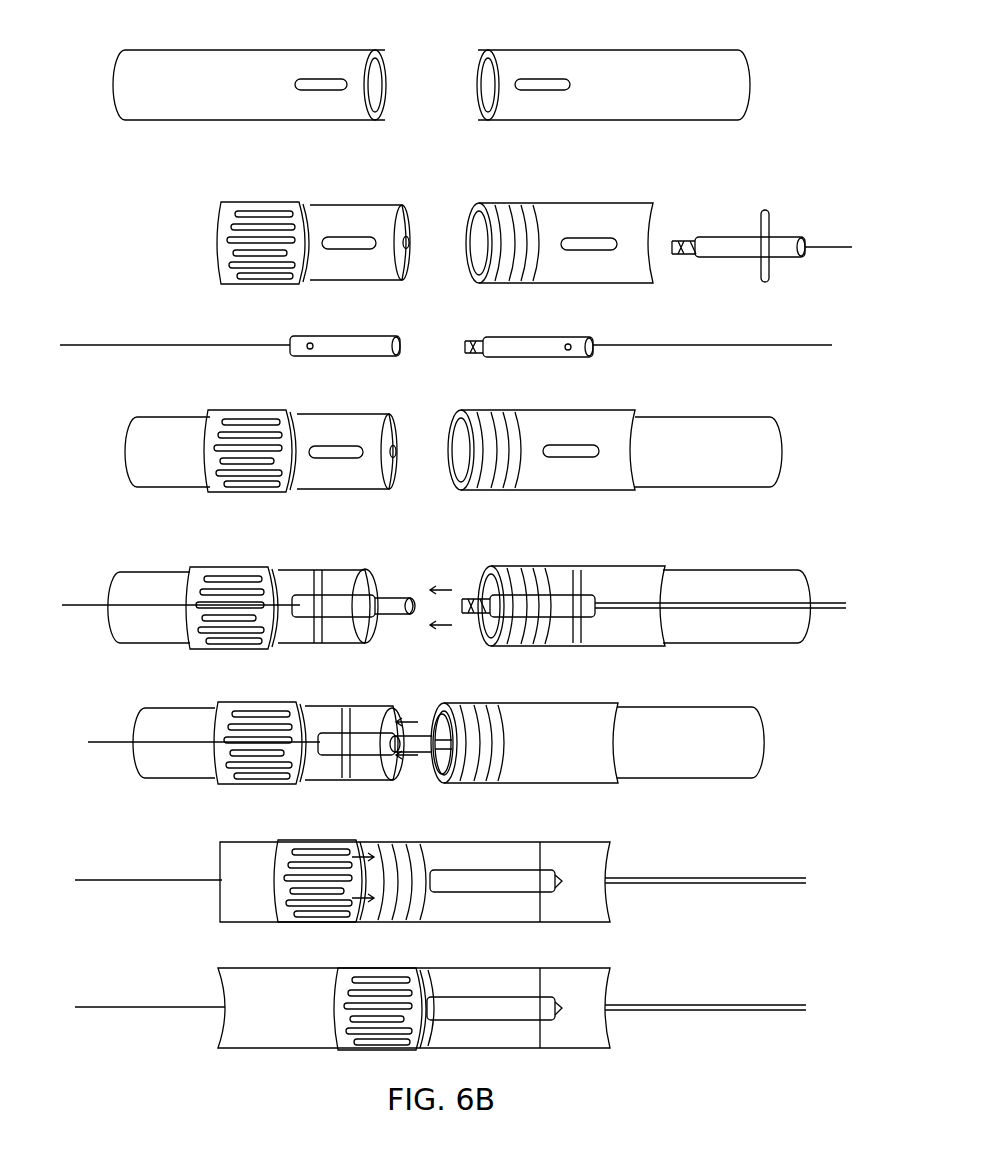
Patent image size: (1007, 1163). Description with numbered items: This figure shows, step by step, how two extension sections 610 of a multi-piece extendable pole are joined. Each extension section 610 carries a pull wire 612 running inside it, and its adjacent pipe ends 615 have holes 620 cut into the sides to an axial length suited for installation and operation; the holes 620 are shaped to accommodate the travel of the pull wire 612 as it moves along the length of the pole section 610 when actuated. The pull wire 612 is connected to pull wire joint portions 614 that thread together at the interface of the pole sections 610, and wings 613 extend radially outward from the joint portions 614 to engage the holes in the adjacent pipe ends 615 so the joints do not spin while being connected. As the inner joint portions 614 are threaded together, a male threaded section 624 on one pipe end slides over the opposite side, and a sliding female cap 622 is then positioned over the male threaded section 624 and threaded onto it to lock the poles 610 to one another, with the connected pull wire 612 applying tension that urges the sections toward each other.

The extension section 610 is at (439, 533).
The pull wire 612 is at (456, 602).
The wing 613 is at (545, 472).
The pull wire joint portion 614 is at (547, 605).
The adjacent pipe end 615 is at (405, 39).
The hole 620 is at (432, 57).
The sliding female cap 622 is at (306, 609).
The male threaded section 624 is at (542, 615).